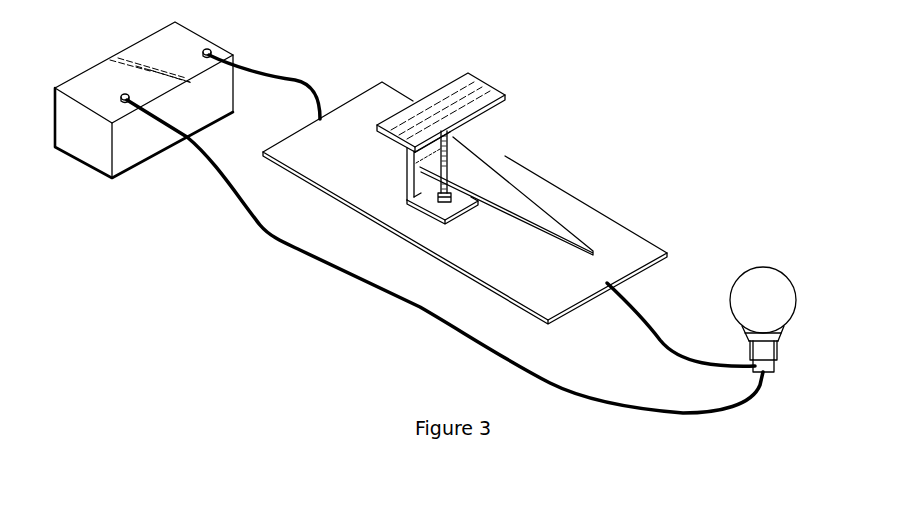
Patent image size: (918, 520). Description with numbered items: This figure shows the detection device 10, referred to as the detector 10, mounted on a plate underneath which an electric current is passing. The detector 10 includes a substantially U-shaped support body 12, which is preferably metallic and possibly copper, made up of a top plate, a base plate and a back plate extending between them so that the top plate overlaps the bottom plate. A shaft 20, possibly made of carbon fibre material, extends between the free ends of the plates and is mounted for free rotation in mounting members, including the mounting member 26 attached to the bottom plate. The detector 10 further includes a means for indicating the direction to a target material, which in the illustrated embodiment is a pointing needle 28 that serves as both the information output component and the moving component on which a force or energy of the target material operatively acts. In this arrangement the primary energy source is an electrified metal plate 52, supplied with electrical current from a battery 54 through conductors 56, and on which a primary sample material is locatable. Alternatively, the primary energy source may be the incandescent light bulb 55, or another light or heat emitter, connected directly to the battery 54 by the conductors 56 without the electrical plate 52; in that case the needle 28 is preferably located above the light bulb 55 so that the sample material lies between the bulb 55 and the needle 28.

The detection device 10 is at (494, 161).
The support body 12 is at (477, 87).
The shaft 20 is at (456, 204).
The mounting member 26 is at (419, 202).
The pointing needle 28 is at (527, 210).
The electrified metal plate 52 is at (625, 238).
The battery 54 is at (187, 37).
The incandescent light bulb 55 is at (808, 337).
The conductors 56 is at (285, 70).